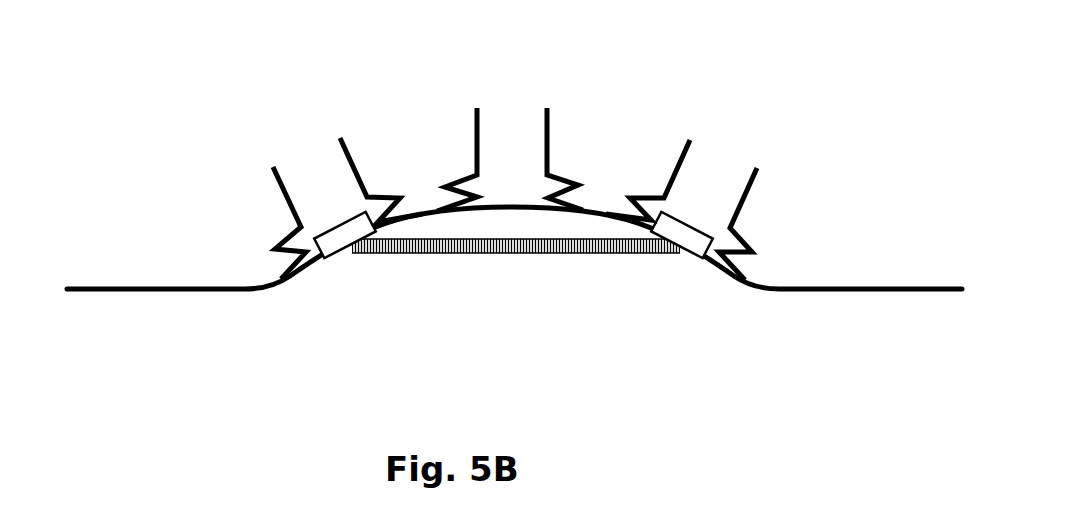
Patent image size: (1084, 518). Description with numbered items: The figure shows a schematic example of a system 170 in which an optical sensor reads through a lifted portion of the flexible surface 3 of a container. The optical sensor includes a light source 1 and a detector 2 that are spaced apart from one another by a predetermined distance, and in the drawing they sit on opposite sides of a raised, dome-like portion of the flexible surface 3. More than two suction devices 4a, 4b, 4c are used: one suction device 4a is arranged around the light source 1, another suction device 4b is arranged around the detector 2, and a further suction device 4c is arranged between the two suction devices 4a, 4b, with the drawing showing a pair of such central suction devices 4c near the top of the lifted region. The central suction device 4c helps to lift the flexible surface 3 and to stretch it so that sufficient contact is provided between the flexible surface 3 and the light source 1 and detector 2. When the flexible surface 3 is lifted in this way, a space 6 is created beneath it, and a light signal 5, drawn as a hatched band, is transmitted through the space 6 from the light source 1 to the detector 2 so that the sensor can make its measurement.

The system 170 is at (224, 88).
The light source 1 is at (305, 229).
The detector 2 is at (712, 227).
The flexible surface 3 is at (156, 305).
The suction device 4a is at (370, 165).
The suction device 4b is at (760, 143).
The suction device 4c is at (562, 143).
The light signal 5 is at (464, 264).
The space 6 is at (569, 284).